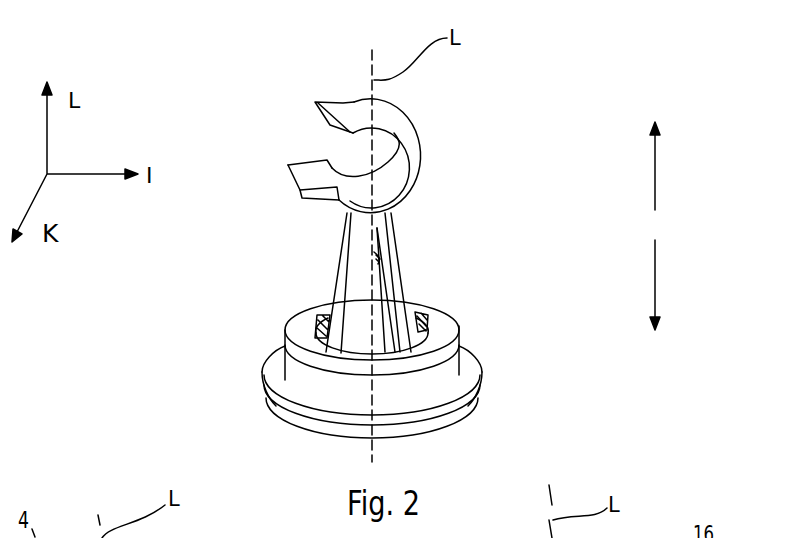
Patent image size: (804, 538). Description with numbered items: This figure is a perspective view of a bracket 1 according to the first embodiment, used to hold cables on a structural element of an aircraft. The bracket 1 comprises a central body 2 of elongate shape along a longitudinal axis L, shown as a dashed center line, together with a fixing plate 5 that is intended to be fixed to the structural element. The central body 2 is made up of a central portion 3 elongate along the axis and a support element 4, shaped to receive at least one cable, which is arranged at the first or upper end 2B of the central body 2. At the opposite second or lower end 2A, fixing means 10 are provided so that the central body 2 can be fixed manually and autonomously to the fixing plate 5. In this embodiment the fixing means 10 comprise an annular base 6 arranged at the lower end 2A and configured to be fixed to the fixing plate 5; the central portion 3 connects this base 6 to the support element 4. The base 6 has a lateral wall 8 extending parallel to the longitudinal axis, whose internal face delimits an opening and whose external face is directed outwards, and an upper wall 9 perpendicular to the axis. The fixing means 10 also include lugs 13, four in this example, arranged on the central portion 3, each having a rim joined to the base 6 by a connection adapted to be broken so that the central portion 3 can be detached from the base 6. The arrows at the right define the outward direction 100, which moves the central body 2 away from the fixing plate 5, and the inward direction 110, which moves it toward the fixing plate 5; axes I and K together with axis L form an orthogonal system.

The bracket 1 is at (220, 121).
The central body 2 is at (442, 243).
The lower end 2A is at (437, 356).
The upper end 2B is at (437, 165).
The central portion 3 is at (353, 278).
The support element 4 is at (354, 115).
The fixing plate 5 is at (433, 433).
The base 6 is at (453, 333).
The lateral wall 8 is at (325, 392).
The upper wall 9 is at (325, 358).
The fixing means 10 is at (437, 300).
The lugs 13 is at (350, 322).
The outward direction 100 is at (656, 178).
The inward direction 110 is at (656, 275).